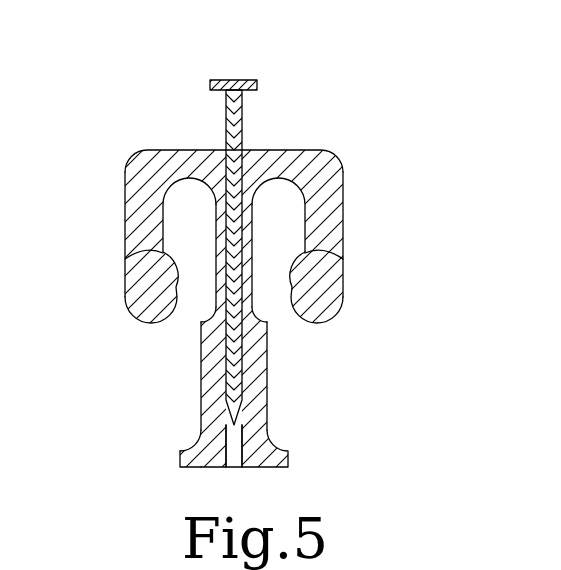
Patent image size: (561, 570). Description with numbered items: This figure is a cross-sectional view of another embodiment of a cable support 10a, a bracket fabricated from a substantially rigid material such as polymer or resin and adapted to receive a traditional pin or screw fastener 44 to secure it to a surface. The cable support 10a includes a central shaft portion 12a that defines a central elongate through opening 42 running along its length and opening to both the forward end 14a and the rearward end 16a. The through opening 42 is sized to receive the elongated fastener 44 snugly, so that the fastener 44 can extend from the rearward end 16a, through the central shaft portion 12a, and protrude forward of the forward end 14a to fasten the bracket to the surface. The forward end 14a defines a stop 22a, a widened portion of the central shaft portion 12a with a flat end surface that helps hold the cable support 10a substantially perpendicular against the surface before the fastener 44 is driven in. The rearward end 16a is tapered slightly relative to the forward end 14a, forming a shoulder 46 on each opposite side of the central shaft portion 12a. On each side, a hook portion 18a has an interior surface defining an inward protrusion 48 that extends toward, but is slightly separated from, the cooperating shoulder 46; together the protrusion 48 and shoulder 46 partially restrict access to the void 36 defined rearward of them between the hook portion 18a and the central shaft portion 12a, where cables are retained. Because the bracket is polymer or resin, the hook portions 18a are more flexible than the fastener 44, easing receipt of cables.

The cable support 10a is at (168, 101).
The fastener 44 is at (226, 110).
The void 36 is at (188, 200).
The hook portion 18a is at (125, 190).
The rearward end 16a is at (262, 224).
The inward protrusion 48 is at (126, 259).
The shoulder 46 is at (203, 318).
The central shaft portion 12a is at (290, 379).
The stop 22a is at (181, 462).
The through opening 42 is at (232, 437).
The forward end 14a is at (288, 446).